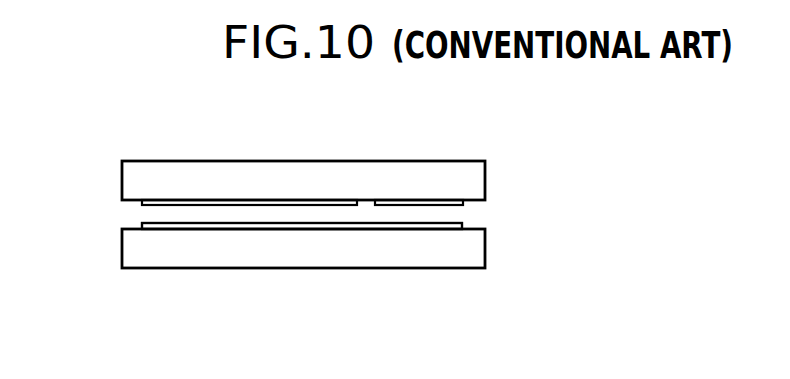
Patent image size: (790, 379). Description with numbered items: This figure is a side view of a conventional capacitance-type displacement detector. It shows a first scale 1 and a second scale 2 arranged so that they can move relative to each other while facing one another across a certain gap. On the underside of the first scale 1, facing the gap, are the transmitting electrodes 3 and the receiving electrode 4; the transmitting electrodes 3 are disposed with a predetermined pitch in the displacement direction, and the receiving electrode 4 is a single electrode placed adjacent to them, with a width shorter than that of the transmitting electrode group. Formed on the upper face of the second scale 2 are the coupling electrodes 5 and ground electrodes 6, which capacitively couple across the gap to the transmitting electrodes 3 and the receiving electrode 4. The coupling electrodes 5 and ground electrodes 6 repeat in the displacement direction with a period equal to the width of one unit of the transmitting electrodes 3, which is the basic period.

The first scale 1 is at (403, 161).
The second scale 2 is at (400, 268).
The transmitting electrodes 3 is at (143, 203).
The receiving electrode 4 is at (463, 202).
The coupling electrodes 5 is at (143, 225).
The ground electrodes 6 is at (302, 226).